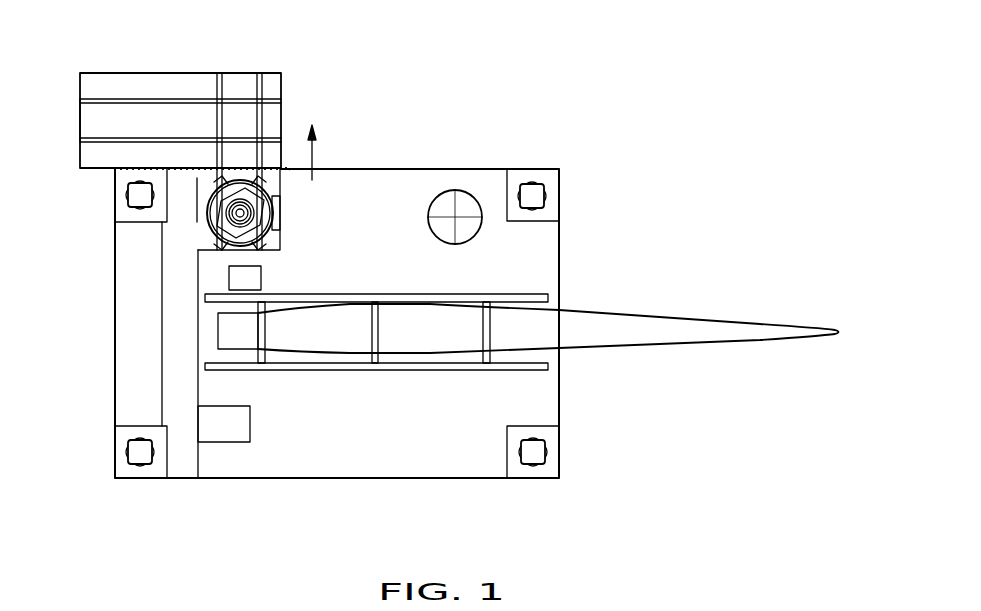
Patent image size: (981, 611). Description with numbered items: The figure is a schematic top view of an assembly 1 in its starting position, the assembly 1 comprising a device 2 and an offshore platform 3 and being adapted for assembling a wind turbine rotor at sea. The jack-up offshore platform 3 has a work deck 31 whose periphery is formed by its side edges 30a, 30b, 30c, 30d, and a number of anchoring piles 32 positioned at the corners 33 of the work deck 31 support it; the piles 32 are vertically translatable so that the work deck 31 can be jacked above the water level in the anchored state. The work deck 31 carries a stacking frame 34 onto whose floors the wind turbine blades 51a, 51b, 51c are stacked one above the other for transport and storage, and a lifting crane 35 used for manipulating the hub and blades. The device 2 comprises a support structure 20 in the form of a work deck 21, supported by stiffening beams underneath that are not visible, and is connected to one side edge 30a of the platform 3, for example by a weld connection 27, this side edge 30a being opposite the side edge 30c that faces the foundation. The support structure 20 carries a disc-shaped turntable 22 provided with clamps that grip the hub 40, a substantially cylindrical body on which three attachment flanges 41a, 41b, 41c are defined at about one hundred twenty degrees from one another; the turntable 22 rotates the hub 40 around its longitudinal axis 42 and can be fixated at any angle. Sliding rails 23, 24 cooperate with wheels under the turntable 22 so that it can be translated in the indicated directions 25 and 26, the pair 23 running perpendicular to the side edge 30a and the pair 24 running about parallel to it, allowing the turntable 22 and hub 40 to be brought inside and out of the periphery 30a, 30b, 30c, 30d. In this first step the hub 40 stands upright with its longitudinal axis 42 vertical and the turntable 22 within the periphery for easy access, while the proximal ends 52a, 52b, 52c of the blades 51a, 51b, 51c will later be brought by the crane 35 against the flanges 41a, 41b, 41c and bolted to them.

The assembly 1 is at (622, 76).
The device 2 is at (199, 305).
The offshore platform 3 is at (332, 328).
The support structure 20 is at (282, 87).
The work deck 21 is at (174, 131).
The turntable 22 is at (267, 237).
The sliding rails 23 is at (219, 73).
The sliding rails 24 is at (80, 100).
The direction 25 is at (313, 158).
The direction 26 is at (194, 609).
The weld connection 27 is at (128, 168).
The side edge 30a is at (420, 168).
The side edge 30b is at (560, 397).
The side edge 30c is at (337, 478).
The side edge 30d is at (115, 327).
The work deck 31 is at (396, 449).
The anchoring piles 32 is at (137, 198).
The corners 33 is at (115, 170).
The stacking frame 34 is at (467, 365).
The lifting crane 35 is at (467, 232).
The hub 40 is at (265, 214).
The attachment flange 41a is at (277, 212).
The attachment flange 41b is at (213, 233).
The attachment flange 41c is at (217, 187).
The longitudinal axis 42 is at (233, 222).
The wind turbine blade 51a is at (528, 313).
The wind turbine blade 51b is at (528, 328).
The wind turbine blade 51c is at (680, 323).
The proximal end 52a is at (354, 349).
The proximal end 52b is at (374, 332).
The proximal end 52c is at (374, 332).